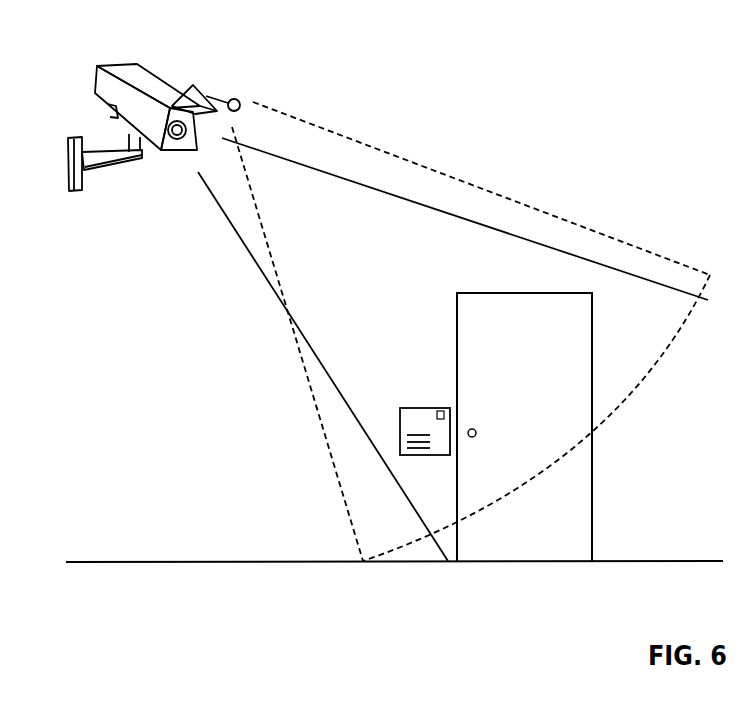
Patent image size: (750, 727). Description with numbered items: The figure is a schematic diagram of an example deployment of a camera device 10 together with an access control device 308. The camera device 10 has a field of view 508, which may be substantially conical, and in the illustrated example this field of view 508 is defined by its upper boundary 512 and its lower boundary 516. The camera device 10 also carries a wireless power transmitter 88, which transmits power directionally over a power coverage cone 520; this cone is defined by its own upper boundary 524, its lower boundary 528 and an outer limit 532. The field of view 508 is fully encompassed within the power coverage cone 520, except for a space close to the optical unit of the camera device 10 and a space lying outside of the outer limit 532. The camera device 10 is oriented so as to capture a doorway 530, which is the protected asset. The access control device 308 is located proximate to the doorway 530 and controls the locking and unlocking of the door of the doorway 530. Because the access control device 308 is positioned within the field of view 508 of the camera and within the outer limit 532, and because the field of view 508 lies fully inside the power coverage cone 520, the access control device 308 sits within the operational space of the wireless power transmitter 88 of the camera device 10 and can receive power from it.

The camera device 10 is at (163, 78).
The wireless power transmitter 88 is at (213, 92).
The upper boundary 524 is at (346, 129).
The power coverage cone 520 is at (413, 180).
The field of view 508 is at (477, 250).
The upper boundary 512 is at (592, 267).
The lower boundary 528 is at (297, 345).
The lower boundary 516 is at (340, 395).
The access control device 308 is at (400, 447).
The outer limit 532 is at (617, 406).
The doorway 530 is at (578, 498).